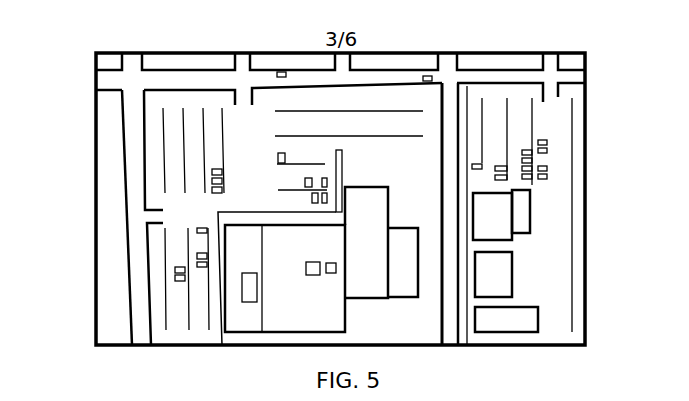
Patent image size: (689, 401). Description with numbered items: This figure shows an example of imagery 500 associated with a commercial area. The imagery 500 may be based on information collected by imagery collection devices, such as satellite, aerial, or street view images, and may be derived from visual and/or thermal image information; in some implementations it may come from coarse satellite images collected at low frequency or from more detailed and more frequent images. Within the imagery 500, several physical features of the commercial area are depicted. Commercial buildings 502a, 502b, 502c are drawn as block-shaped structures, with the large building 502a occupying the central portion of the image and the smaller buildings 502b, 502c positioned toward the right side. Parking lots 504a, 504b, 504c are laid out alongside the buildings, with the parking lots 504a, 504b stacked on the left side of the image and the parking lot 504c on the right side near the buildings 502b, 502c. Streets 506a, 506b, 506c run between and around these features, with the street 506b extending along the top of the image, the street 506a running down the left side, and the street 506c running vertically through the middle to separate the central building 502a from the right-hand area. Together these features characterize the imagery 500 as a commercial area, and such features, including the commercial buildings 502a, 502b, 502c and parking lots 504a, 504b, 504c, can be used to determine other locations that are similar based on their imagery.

The imagery 500 is at (78, 66).
The commercial building 502a is at (293, 312).
The commercial building 502b is at (492, 273).
The commercial building 502c is at (500, 228).
The parking lot 504a is at (178, 255).
The parking lot 504b is at (195, 168).
The parking lot 504c is at (497, 133).
The street 506a is at (138, 245).
The street 506b is at (219, 78).
The street 506c is at (455, 315).